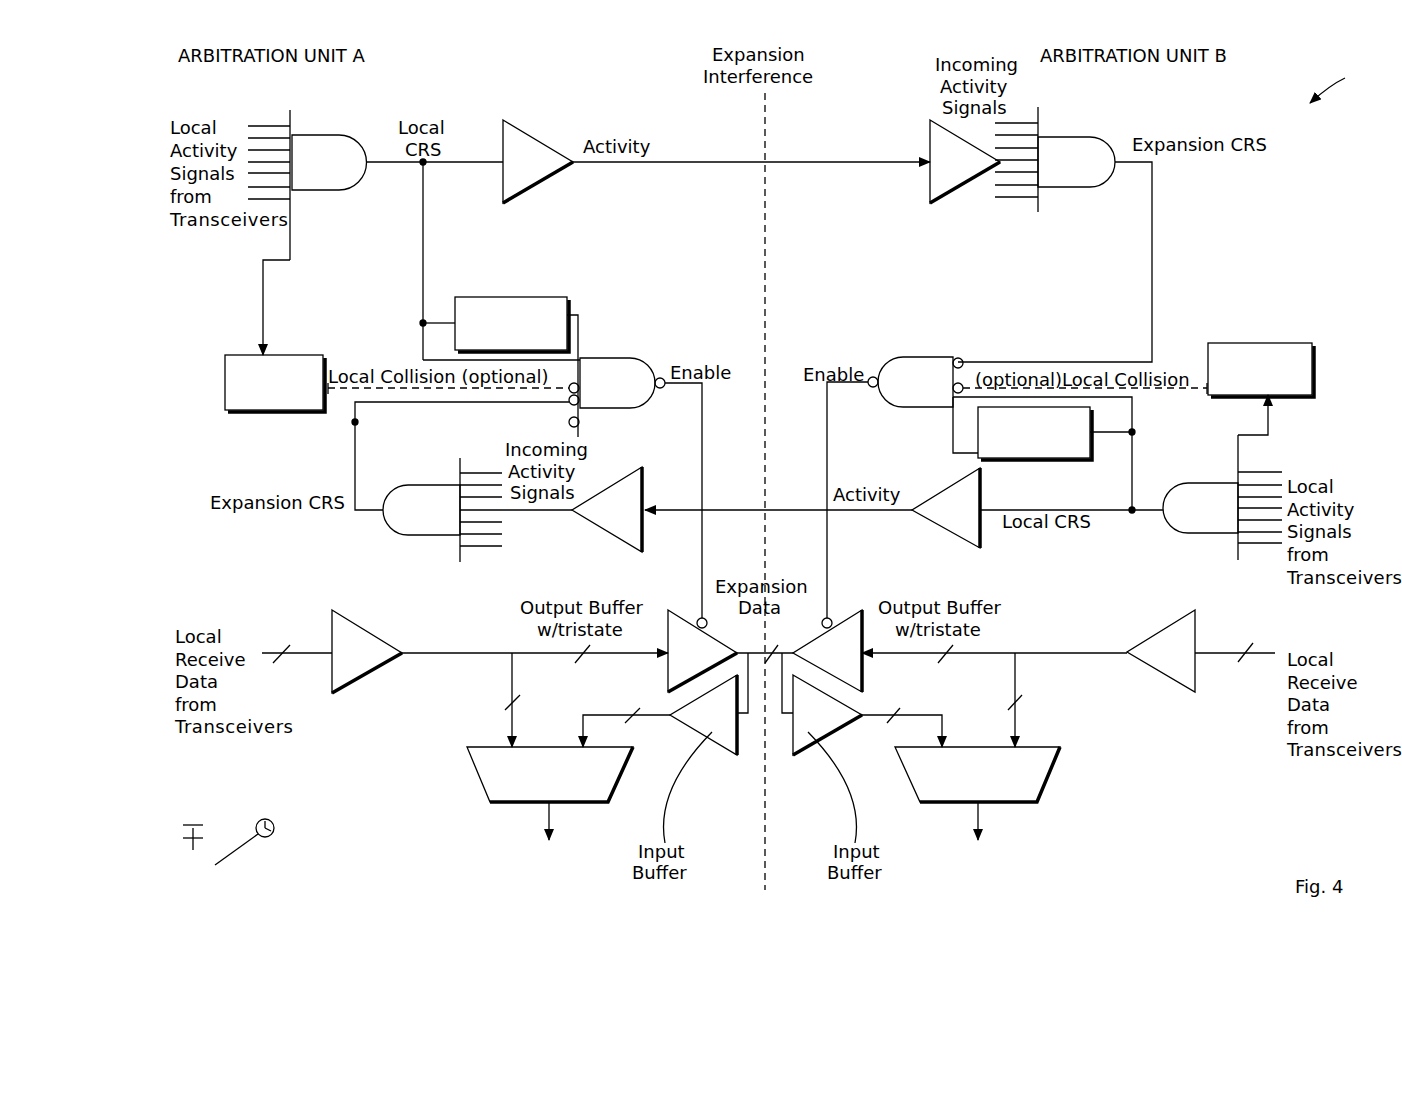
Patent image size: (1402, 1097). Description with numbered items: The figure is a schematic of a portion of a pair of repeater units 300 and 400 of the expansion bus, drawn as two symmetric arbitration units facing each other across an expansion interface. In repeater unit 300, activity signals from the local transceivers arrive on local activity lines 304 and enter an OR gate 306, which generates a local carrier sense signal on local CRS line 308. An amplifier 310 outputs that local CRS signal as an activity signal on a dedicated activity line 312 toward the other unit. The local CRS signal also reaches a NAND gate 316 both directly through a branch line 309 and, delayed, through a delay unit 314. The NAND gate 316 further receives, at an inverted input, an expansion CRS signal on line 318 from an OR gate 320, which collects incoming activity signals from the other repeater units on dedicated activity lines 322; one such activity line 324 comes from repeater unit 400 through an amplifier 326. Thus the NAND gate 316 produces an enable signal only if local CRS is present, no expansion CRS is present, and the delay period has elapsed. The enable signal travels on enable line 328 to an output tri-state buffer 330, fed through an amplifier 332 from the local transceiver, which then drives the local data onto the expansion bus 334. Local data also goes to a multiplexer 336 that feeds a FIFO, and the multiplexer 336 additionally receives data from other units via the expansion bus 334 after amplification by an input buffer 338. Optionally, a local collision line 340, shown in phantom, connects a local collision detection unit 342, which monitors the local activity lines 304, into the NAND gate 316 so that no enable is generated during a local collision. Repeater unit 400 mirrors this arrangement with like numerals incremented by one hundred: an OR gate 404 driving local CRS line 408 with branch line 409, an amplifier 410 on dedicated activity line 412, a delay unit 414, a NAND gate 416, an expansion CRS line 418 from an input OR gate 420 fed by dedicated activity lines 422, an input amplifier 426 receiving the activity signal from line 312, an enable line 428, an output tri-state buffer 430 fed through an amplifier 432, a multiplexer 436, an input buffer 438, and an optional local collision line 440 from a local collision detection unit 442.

The repeater unit 300 is at (224, 855).
The local activity lines 304 is at (270, 122).
The OR gate 306 is at (329, 162).
The local CRS line 308 is at (473, 162).
The branch line 309 is at (423, 340).
The amplifier 310 is at (538, 161).
The dedicated activity line 312 is at (620, 165).
The delay unit 314 is at (516, 367).
The NAND gate 316 is at (544, 392).
The expansion CRS line 318 is at (355, 487).
The OR gate 320 is at (421, 510).
The dedicated activity lines 322 is at (480, 548).
The activity line 324 is at (677, 513).
The amplifier 326 is at (572, 509).
The enable line 328 is at (702, 425).
The output tri-state buffer 330 is at (569, 651).
The amplifier 332 is at (332, 651).
The expansion bus 334 is at (758, 670).
The multiplexer 336 is at (550, 746).
The input buffer 338 is at (660, 715).
The local collision line 340 is at (333, 392).
The local collision detection unit 342 is at (275, 336).
The repeater unit 400 is at (1335, 78).
The OR gate 404 is at (1222, 497).
The local CRS line 408 is at (1132, 465).
The branch line 409 is at (1135, 415).
The amplifier 410 is at (946, 508).
The dedicated activity line 412 is at (848, 513).
The delay unit 414 is at (1022, 428).
The NAND gate 416 is at (915, 382).
The expansion CRS line 418 is at (1152, 235).
The input OR gate 420 is at (1076, 162).
The dedicated activity lines 422 is at (1025, 118).
The input amplifier 426 is at (965, 161).
The enable line 428 is at (827, 425).
The output tri-state buffer 430 is at (960, 651).
The amplifier 432 is at (1201, 651).
The multiplexer 436 is at (977, 746).
The input buffer 438 is at (867, 715).
The local collision line 440 is at (1175, 392).
The local collision detection unit 442 is at (1261, 389).